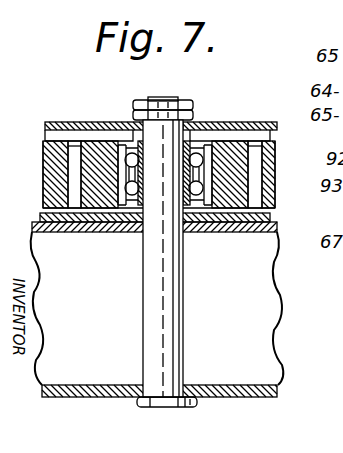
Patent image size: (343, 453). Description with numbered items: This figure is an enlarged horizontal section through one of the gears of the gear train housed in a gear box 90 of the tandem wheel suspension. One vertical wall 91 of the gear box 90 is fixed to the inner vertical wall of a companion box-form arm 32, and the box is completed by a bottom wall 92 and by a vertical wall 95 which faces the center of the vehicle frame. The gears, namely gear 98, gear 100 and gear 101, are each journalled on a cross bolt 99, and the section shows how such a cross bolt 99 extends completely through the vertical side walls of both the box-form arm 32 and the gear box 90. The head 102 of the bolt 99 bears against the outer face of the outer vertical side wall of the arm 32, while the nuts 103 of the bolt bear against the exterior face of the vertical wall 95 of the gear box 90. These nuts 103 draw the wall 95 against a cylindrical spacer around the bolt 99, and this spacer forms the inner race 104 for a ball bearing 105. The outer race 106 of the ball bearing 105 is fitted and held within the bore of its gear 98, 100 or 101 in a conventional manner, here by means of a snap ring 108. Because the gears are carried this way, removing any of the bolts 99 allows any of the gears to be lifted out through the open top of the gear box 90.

The gear box 90 is at (90, 112).
The vertical wall 95 is at (65, 122).
The gear 98 is at (45, 144).
The gear 100 is at (233, 120).
The nuts 103 is at (134, 112).
The ball bearing 105 is at (100, 177).
The outer race 106 is at (118, 178).
The bottom wall 92 is at (270, 134).
The snap ring 108 is at (270, 163).
The gear 101 is at (273, 206).
The vertical wall 91 is at (37, 248).
The inner race 104 is at (148, 200).
The cross bolt 99 is at (155, 326).
The head 102 is at (196, 404).
The box-form arm 32 is at (280, 392).